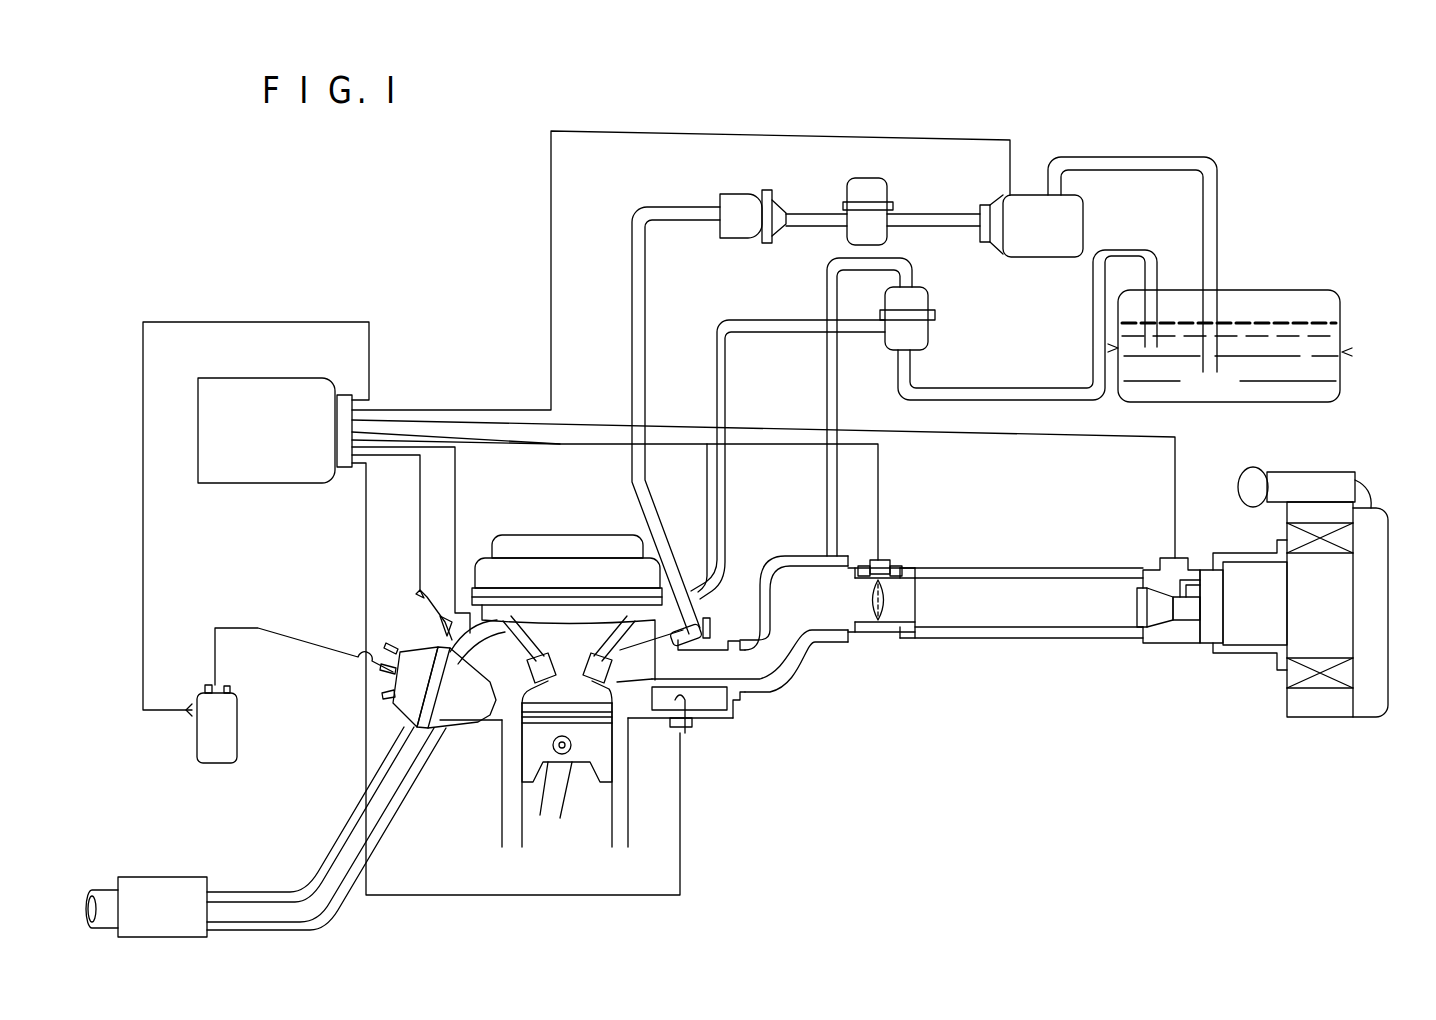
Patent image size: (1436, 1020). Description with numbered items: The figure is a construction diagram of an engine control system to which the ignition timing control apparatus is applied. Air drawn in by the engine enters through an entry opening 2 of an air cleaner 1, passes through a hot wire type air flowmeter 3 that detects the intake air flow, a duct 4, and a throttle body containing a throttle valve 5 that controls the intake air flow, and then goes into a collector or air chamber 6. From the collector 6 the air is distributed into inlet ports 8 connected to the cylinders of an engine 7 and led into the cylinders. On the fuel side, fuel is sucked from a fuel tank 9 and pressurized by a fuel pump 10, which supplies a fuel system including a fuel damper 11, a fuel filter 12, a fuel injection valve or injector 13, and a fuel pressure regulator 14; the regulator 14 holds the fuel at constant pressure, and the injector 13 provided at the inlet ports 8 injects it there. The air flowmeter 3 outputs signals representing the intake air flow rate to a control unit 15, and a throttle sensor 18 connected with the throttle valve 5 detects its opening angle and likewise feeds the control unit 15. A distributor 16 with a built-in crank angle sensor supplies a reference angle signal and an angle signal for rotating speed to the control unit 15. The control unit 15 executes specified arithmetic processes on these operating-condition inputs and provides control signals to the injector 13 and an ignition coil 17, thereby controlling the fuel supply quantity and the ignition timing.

The air cleaner 1 is at (1332, 720).
The entry opening 2 is at (1262, 468).
The hot wire type air flowmeter 3 is at (1175, 645).
The duct 4 is at (1010, 640).
The throttle valve 5 is at (875, 632).
The collector 6 is at (803, 633).
The engine 7 is at (562, 535).
The inlet ports 8 is at (713, 672).
The fuel tank 9 is at (1310, 292).
The fuel pump 10 is at (1033, 195).
The fuel damper 11 is at (852, 182).
The fuel filter 12 is at (722, 197).
The fuel injection valve 13 is at (712, 622).
The fuel pressure regulator 14 is at (930, 335).
The control unit 15 is at (248, 483).
The distributor 16 is at (390, 690).
The ignition coil 17 is at (213, 765).
The throttle sensor 18 is at (890, 562).